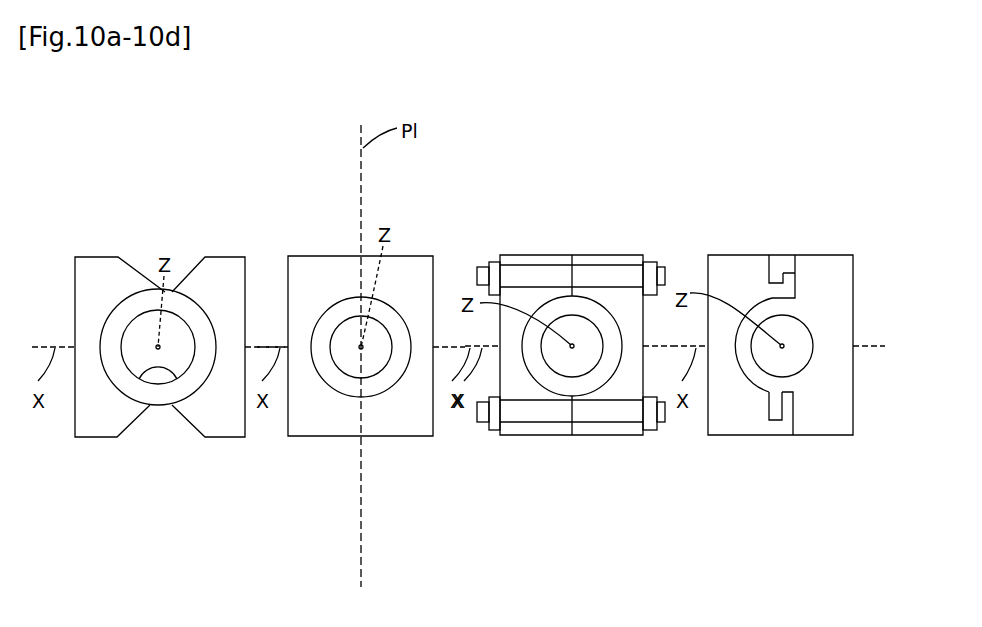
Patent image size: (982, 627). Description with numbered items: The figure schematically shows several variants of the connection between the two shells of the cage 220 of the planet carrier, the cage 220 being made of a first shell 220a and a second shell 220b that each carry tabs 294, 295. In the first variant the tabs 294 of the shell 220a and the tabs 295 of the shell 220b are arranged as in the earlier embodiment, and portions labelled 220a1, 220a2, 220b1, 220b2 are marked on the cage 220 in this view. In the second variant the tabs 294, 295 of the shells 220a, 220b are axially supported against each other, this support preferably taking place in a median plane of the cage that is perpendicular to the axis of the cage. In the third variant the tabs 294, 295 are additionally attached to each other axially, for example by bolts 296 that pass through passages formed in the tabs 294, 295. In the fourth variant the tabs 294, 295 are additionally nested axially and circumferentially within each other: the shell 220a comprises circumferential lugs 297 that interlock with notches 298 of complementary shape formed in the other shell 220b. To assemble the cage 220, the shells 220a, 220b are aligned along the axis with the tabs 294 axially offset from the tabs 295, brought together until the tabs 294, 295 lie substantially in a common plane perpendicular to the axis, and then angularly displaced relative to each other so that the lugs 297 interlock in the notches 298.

In FIG. 10A, the cage 220 is at (174, 374).
In FIG. 10B, the cage 220 is at (374, 339).
In FIG. 10C, the cage 220 is at (598, 340).
In FIG. 10D, the cage 220 is at (798, 329).
In FIG. 10A, the shell 220a is at (113, 314).
In FIG. 10B, the shell 220a is at (310, 293).
In FIG. 10C, the shell 220a is at (549, 293).
In FIG. 10D, the shell 220a is at (738, 310).
In FIG. 10A, the shell 220b is at (230, 314).
In FIG. 10B, the shell 220b is at (425, 309).
In FIG. 10C, the shell 220b is at (645, 295).
In FIG. 10D, the shell 220b is at (843, 300).
In FIG. 10A, the tab 294 is at (87, 265).
In FIG. 10B, the tab 294 is at (340, 263).
In FIG. 10C, the tab 294 is at (527, 258).
In FIG. 10D, the tab 294 is at (723, 253).
In FIG. 10A, the tab 295 is at (217, 265).
In FIG. 10B, the tab 295 is at (410, 272).
In FIG. 10C, the tab 295 is at (628, 263).
In FIG. 10D, the tab 295 is at (817, 295).
In FIG. 10A, the first contact surface of first half 220a1 is at (181, 446).
In FIG. 10A, the second contact surface of first half 220a2 is at (181, 446).
In FIG. 10A, the first contact surface of second half 220b1 is at (181, 446).
In FIG. 10A, the second contact surface of second half 220b2 is at (183, 377).
In FIG. 10C, the bolt 296 is at (584, 275).
In FIG. 10D, the circumferential lug 297 is at (790, 280).
In FIG. 10D, the notch 298 is at (787, 283).